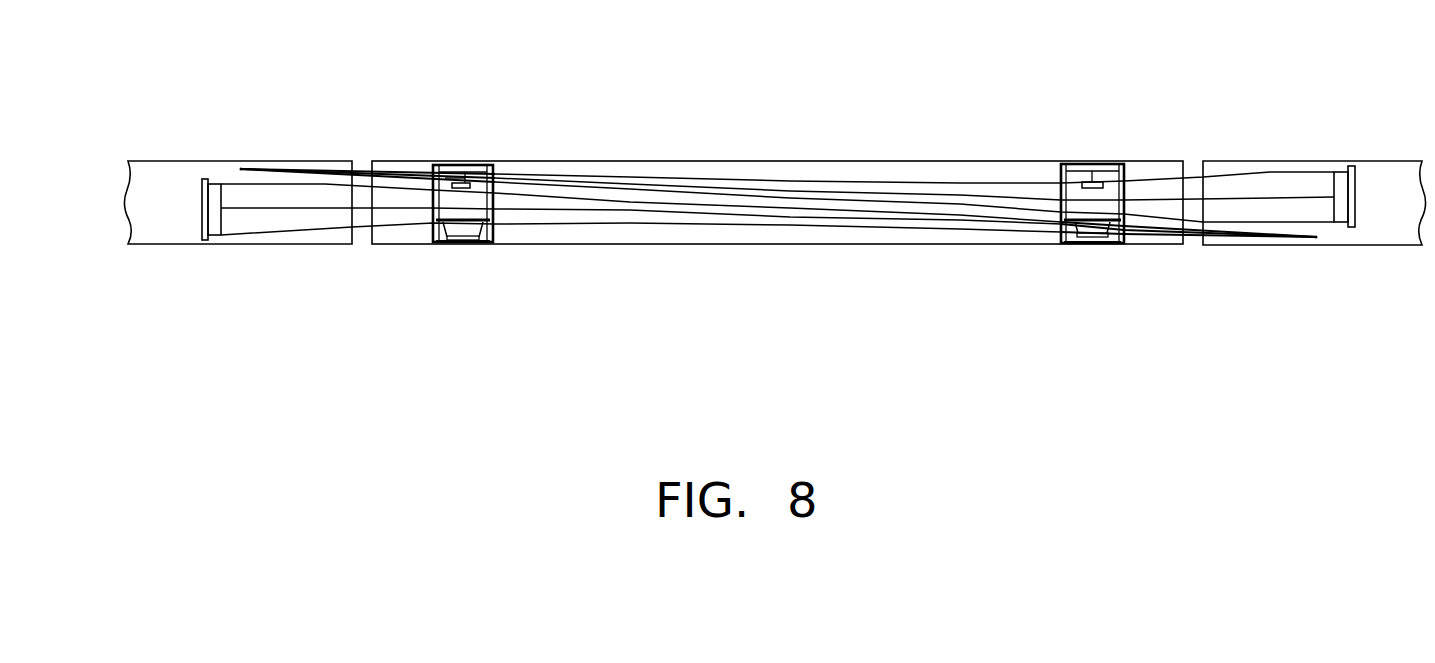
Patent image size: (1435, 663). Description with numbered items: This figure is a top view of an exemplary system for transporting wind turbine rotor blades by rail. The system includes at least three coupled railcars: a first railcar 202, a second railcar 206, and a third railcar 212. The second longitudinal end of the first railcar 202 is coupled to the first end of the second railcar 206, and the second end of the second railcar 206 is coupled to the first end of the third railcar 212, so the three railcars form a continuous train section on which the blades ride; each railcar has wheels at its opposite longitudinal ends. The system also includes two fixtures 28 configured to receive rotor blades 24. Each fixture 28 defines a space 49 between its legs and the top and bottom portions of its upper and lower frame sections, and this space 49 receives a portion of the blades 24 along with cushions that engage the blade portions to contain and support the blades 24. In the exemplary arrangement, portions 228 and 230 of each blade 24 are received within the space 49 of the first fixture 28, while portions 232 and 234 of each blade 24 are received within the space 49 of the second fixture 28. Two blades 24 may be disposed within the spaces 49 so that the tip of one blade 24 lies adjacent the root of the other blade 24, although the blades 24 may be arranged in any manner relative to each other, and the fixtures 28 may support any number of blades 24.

The first railcar 202 is at (155, 170).
The third railcar 212 is at (1395, 170).
The second railcar 206 is at (750, 170).
The rotor blade 24 is at (258, 223).
The blade portion 230 is at (454, 181).
The blade portion 228 is at (480, 202).
The blade portion 234 is at (1107, 183).
The space 49 is at (476, 256).
The fixture 28 is at (447, 257).
The blade portion 232 is at (1100, 246).